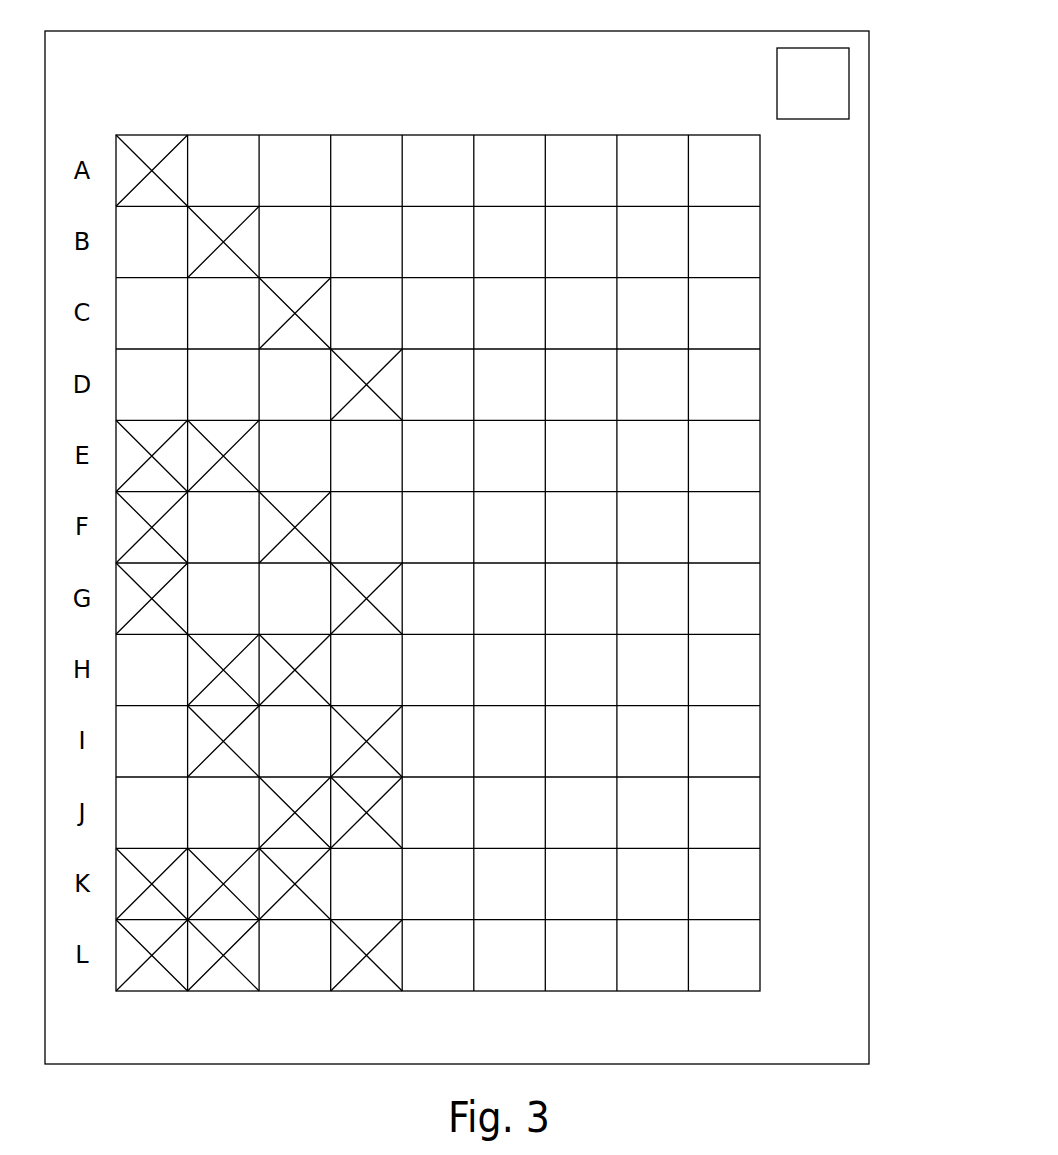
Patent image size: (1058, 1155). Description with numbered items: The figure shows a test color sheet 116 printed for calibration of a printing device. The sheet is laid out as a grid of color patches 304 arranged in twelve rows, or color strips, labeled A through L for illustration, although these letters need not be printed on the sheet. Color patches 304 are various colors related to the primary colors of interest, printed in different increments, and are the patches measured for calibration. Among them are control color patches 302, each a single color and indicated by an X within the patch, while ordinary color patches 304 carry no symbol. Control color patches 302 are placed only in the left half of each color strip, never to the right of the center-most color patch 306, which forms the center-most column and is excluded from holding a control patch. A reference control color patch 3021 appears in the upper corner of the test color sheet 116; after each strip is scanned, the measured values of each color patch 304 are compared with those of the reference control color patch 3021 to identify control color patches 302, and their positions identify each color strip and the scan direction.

The test color sheet 116 is at (869, 543).
The control color patches 302 is at (158, 135).
The reference control color patch 3021 is at (849, 83).
The color patches 304 is at (760, 170).
The center-most color patch 306 is at (445, 135).